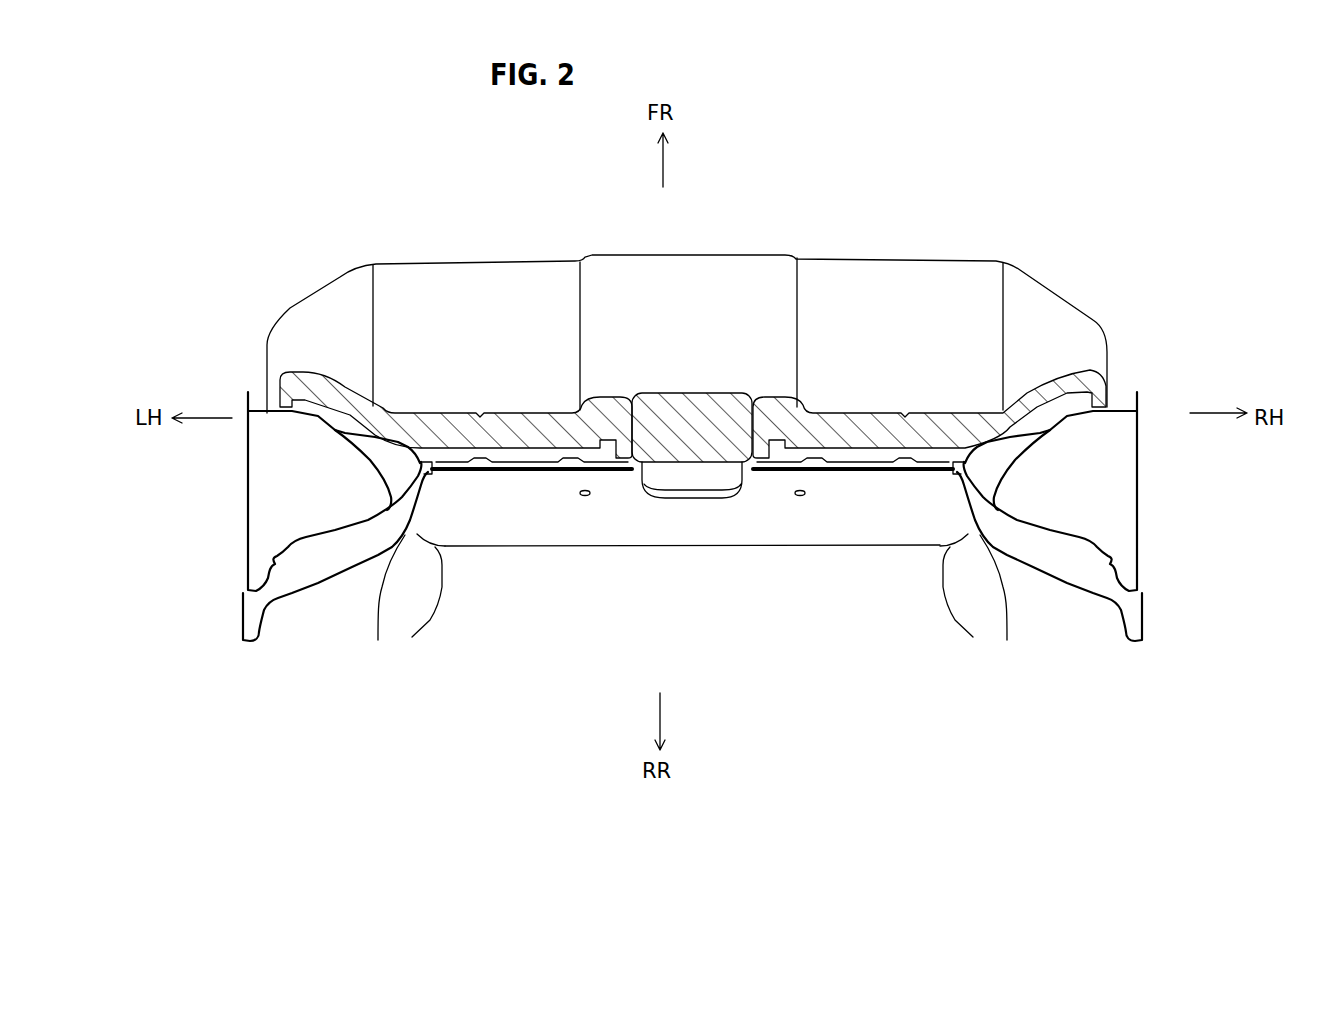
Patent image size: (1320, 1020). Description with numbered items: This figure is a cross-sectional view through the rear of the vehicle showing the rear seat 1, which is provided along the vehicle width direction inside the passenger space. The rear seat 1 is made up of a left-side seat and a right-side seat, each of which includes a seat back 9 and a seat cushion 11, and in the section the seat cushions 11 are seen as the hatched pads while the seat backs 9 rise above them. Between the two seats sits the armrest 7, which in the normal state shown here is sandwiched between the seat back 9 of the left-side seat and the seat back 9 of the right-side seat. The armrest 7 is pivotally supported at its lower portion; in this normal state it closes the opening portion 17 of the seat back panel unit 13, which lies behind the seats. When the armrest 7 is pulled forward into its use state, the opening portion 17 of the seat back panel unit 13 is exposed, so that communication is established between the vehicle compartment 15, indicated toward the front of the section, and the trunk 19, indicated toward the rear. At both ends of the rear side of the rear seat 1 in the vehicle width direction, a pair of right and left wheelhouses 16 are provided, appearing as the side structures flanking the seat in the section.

The rear seat 1 is at (869, 404).
The armrest 7 is at (668, 415).
The seat back 9 is at (930, 418).
The seat cushion 11 is at (907, 287).
The seat back panel unit 13 is at (587, 518).
The vehicle compartment 15 is at (806, 135).
The wheelhouses 16 is at (286, 560).
The opening portion 17 is at (692, 478).
The trunk 19 is at (870, 680).